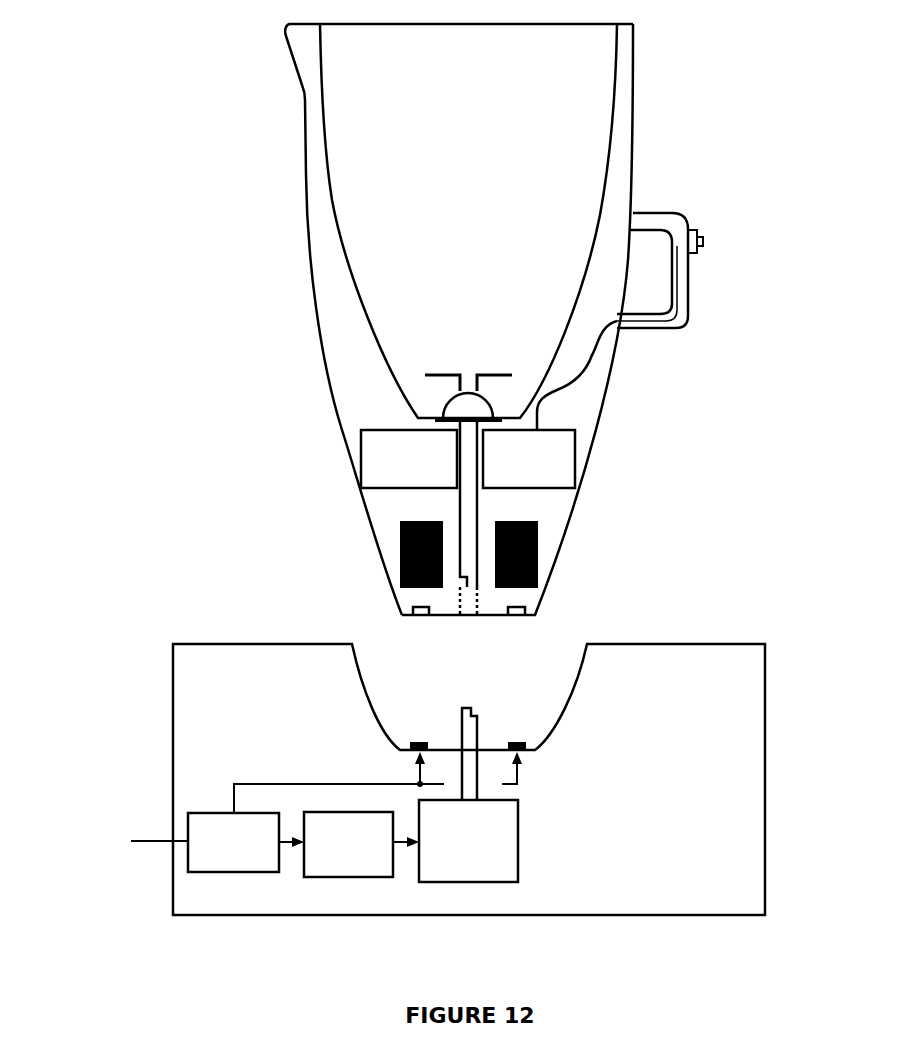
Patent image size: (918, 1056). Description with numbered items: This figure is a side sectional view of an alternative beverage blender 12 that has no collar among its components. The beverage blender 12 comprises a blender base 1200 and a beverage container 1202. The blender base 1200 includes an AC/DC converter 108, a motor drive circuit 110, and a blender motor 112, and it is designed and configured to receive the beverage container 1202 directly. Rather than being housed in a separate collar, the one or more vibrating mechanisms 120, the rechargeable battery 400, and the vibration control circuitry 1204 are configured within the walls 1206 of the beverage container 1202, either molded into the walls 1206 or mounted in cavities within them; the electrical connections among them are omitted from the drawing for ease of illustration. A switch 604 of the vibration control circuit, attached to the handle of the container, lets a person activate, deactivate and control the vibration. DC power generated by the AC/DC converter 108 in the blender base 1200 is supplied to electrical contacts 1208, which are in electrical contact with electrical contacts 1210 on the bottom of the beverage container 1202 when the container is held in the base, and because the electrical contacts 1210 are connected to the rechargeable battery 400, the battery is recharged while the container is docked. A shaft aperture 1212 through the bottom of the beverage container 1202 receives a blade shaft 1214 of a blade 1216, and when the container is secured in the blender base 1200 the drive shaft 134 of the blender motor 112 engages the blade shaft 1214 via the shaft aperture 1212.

The beverage blender 12 is at (98, 411).
The beverage container 1202 is at (290, 250).
The walls of the beverage container 1206 is at (352, 370).
The switch 604 is at (725, 249).
The blade 1216 is at (493, 368).
The blade shaft 1214 is at (462, 515).
The shaft aperture 1212 is at (468, 622).
The rechargeable battery 400 is at (361, 455).
The vibration control circuitry 1204 is at (577, 458).
The vibrating mechanisms 120 is at (388, 549).
The electrical contacts 1210 is at (421, 623).
The blender base 1200 is at (148, 746).
The electrical contacts 1208 is at (415, 737).
The drive shaft 134 is at (477, 708).
The AC/DC converter 108 is at (240, 876).
The motor drive circuit 110 is at (351, 882).
The blender motor 112 is at (473, 886).